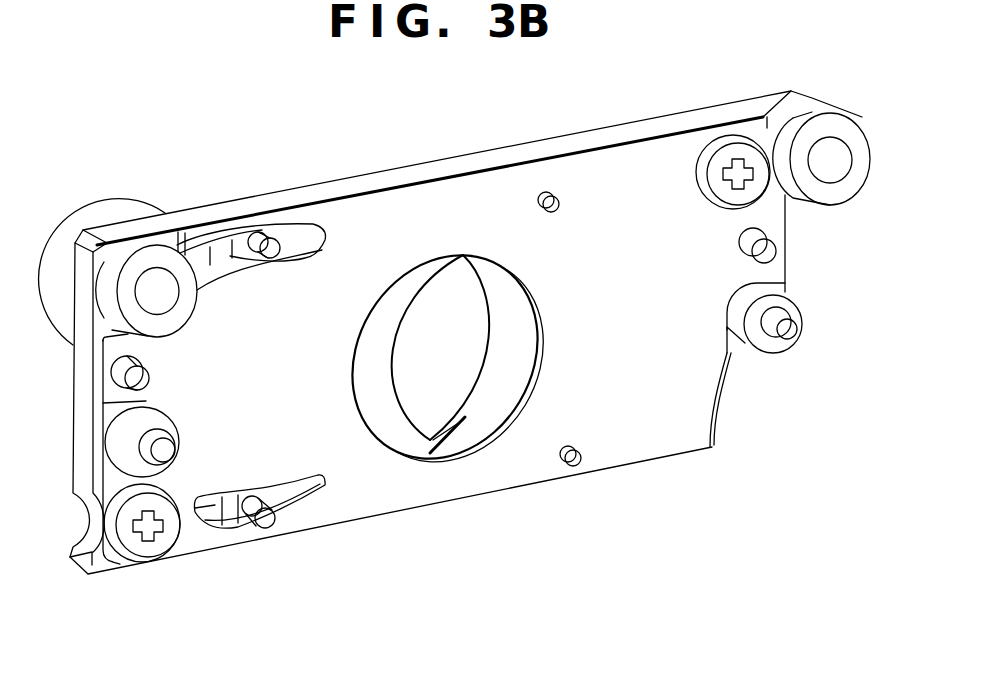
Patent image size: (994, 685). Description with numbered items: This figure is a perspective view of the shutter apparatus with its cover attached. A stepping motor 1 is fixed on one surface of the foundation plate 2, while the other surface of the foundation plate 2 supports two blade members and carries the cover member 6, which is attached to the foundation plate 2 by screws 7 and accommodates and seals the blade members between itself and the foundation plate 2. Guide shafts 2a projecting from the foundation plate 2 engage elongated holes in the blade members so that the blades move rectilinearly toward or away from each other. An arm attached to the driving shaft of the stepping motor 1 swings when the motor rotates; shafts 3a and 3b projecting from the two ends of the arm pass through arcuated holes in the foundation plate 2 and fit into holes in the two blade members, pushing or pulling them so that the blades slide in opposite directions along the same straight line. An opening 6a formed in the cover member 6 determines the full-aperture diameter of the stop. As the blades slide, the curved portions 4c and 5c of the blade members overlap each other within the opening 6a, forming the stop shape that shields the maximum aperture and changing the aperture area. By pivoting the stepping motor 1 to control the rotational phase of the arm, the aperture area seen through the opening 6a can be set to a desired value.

The stepping motor 1 is at (133, 195).
The foundation plate 2 is at (427, 162).
The guide shafts 2a is at (557, 203).
The shaft 3a is at (270, 247).
The shaft 3b is at (270, 527).
The curved portion 4c is at (475, 290).
The curved portion 5c is at (403, 308).
The cover member 6 is at (527, 455).
The opening 6a is at (467, 450).
The screws 7 is at (745, 150).